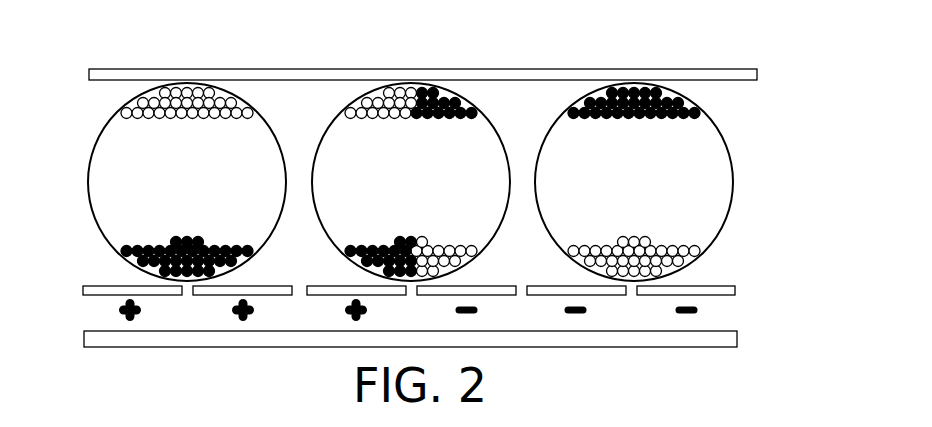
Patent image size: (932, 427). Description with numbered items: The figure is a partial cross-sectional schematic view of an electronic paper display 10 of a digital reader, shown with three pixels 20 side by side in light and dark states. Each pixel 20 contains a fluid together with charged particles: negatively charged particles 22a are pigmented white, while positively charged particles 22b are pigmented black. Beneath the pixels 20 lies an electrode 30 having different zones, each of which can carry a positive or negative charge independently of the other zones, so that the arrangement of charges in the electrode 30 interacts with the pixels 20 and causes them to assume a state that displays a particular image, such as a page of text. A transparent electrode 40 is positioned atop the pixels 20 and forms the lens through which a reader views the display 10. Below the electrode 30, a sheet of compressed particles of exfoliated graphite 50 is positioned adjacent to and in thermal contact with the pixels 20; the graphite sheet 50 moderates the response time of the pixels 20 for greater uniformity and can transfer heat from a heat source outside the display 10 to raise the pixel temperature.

The electronic paper display 10 is at (470, 208).
The pixels 20 is at (100, 163).
The negatively charged particles 22a is at (263, 127).
The positively charged particles 22b is at (263, 242).
The electrode 30 is at (742, 281).
The transparent electrode 40 is at (748, 69).
The sheet of compressed particles of exfoliated graphite 50 is at (725, 348).